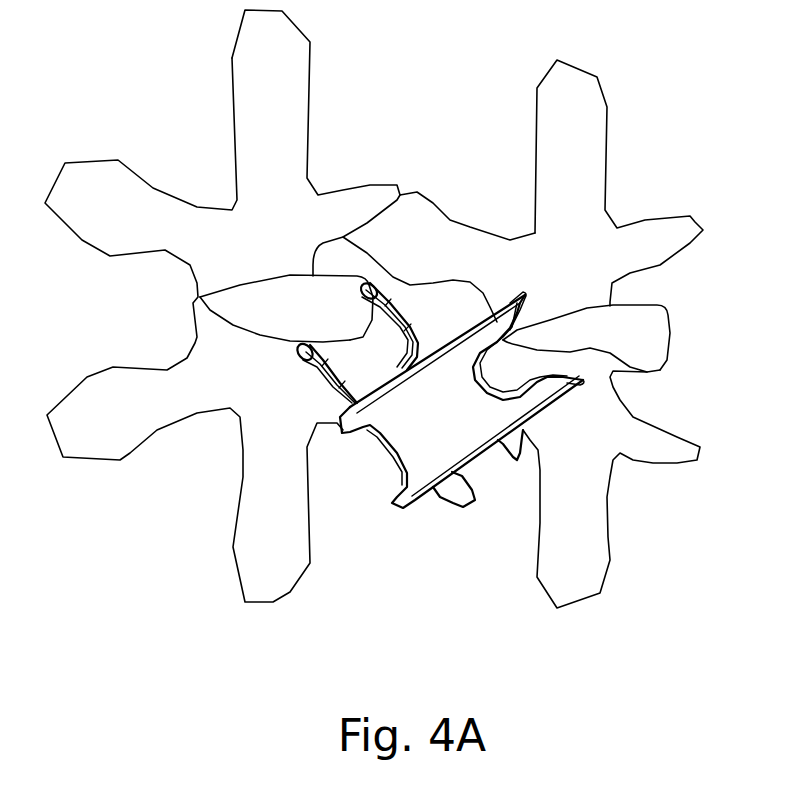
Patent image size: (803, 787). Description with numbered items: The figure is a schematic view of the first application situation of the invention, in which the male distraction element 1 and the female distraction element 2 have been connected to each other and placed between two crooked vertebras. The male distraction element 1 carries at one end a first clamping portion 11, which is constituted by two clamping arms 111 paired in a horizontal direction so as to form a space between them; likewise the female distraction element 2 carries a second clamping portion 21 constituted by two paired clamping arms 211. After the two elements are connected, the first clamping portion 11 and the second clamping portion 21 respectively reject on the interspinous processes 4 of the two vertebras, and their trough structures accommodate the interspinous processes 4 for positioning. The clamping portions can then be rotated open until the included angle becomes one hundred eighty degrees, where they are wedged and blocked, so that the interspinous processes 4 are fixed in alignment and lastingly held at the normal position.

The male distraction element 1 is at (490, 473).
The first clamping portion 11 is at (517, 370).
The clamping arms 111 is at (570, 383).
The female distraction element 2 is at (424, 295).
The second clamping portion 21 is at (358, 354).
The clamping arms 211 is at (300, 352).
The interspinous processes 4 is at (227, 298).